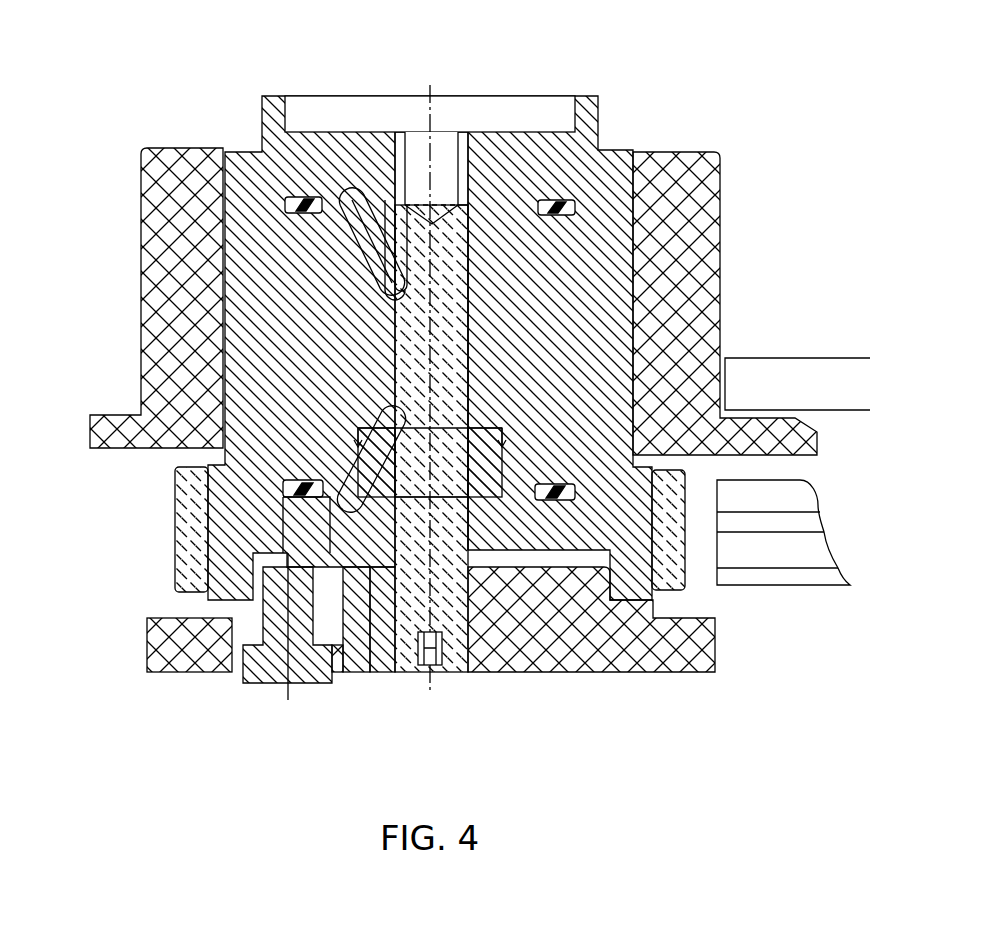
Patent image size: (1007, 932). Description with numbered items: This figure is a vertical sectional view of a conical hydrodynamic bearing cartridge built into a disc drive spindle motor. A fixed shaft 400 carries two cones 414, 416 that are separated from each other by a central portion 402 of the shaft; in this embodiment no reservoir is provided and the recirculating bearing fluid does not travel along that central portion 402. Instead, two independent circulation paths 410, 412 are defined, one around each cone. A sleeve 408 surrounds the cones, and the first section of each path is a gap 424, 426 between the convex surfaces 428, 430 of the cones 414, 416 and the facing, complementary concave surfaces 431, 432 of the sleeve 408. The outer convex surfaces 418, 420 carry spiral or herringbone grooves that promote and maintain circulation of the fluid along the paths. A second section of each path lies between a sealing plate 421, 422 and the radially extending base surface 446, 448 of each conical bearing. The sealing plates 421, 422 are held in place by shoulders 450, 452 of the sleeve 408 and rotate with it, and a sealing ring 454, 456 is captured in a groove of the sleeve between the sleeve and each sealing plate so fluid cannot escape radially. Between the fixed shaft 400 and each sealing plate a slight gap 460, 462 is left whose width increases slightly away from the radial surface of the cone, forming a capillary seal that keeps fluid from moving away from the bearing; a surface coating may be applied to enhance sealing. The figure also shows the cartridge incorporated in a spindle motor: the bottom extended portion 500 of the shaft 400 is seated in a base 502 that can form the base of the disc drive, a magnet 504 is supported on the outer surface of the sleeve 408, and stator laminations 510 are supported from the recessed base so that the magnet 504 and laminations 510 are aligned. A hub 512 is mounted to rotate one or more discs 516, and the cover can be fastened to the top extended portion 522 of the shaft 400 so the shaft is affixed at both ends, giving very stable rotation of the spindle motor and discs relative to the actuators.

The shaft 400 is at (457, 377).
The central portion of the shaft 402 is at (457, 313).
The sleeve 408 is at (607, 262).
The circulation path 410 is at (383, 668).
The circulation path 412 is at (372, 190).
The cone 414 is at (395, 665).
The cone 416 is at (389, 290).
The outer convex surface 418 is at (462, 300).
The outer convex surface 420 is at (495, 500).
The sealing plate 421 is at (295, 562).
The sealing plate 422 is at (262, 105).
The gap 424 is at (365, 487).
The gap 426 is at (380, 258).
The convex surface 428 is at (365, 660).
The convex surface 430 is at (345, 195).
The concave surface 431 is at (378, 458).
The concave surface 432 is at (372, 243).
The base surface 446 is at (220, 585).
The base surface 448 is at (260, 142).
The shoulder 450 is at (295, 548).
The shoulder 452 is at (582, 150).
The sealing ring 454 is at (548, 490).
The sealing ring 456 is at (575, 208).
The gap 460 is at (484, 500).
The gap 462 is at (478, 200).
The bottom extended portion 500 is at (403, 660).
The base 502 is at (577, 677).
The magnet 504 is at (670, 552).
The laminations 510 is at (753, 578).
The hub 512 is at (688, 165).
The disc 516 is at (760, 372).
The top extended portion 522 is at (410, 135).